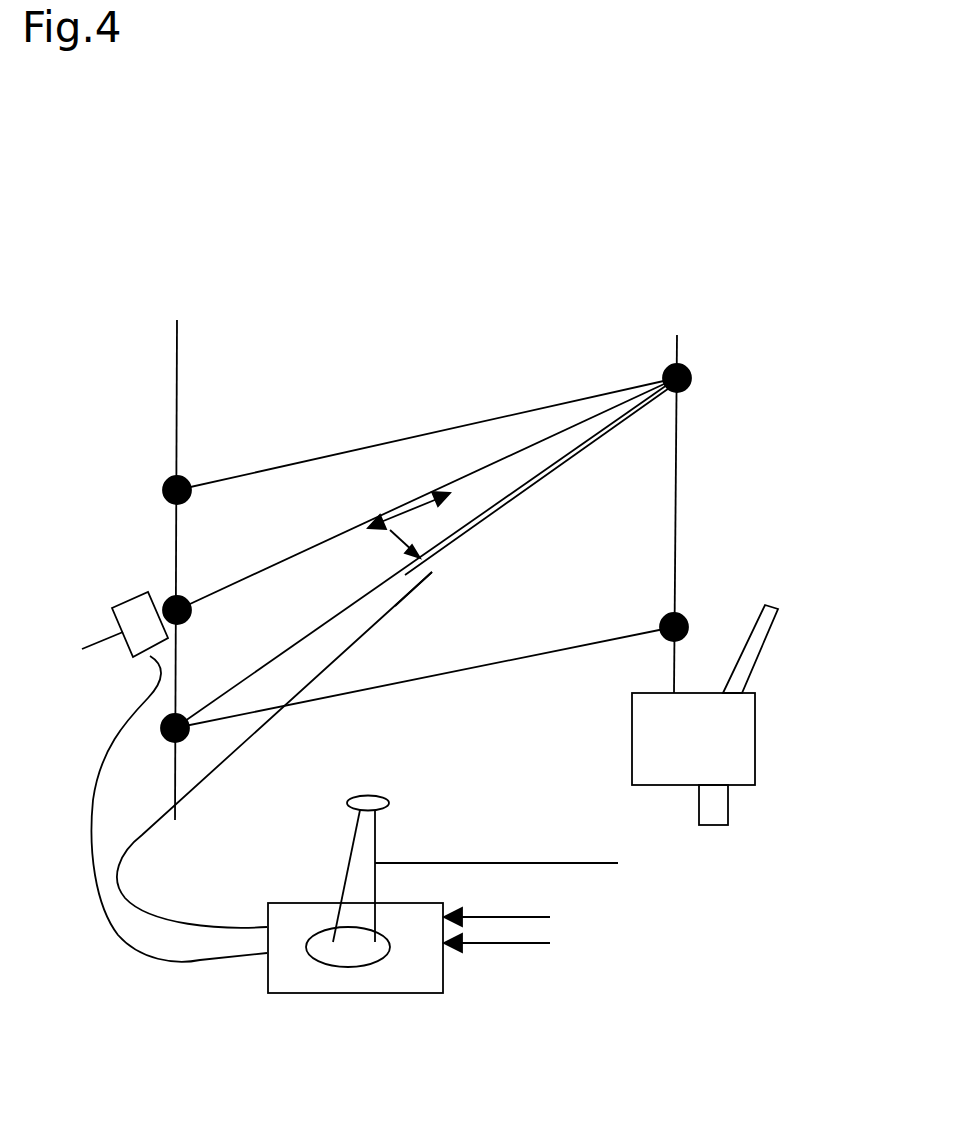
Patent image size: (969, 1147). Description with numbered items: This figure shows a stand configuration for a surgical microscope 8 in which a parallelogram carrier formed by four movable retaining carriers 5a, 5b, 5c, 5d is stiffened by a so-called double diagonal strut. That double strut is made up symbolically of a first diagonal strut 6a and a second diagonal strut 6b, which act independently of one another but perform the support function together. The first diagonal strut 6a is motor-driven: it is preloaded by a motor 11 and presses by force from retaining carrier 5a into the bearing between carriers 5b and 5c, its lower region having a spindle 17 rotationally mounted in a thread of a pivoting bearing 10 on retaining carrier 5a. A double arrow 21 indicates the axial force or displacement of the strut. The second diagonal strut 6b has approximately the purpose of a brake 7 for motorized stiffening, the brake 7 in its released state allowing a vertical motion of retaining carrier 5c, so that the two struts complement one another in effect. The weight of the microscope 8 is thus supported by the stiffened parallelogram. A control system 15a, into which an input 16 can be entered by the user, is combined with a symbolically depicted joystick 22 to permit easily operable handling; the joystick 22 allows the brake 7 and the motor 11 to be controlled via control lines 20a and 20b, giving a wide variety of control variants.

The retaining carrier 5a is at (177, 545).
The retaining carrier 5b is at (500, 417).
The retaining carrier 5c is at (678, 542).
The retaining carrier 5d is at (433, 682).
The first diagonal strut 6a is at (580, 430).
The second diagonal strut 6b is at (582, 455).
The brake 7 is at (440, 578).
The microscope 8 is at (740, 758).
The pivoting bearing 10 is at (188, 620).
The motor 11 is at (143, 592).
The control system 15a is at (373, 968).
The input 16 is at (529, 937).
The spindle 17 is at (108, 638).
The control line 20a is at (172, 963).
The control line 20b is at (145, 873).
The double arrow 21 is at (407, 507).
The joystick 22 is at (527, 868).